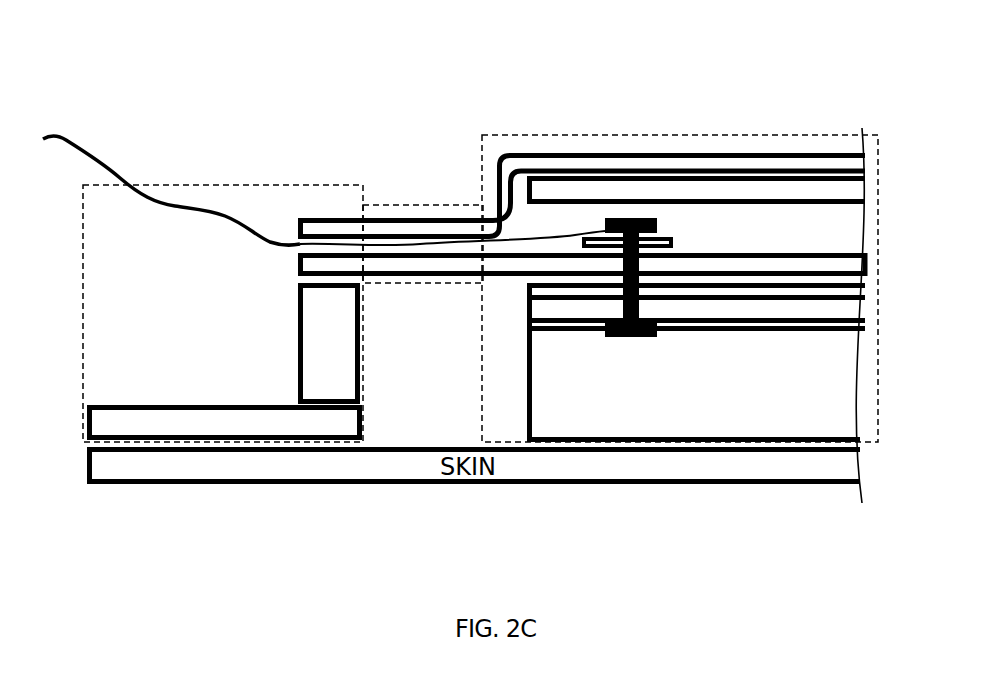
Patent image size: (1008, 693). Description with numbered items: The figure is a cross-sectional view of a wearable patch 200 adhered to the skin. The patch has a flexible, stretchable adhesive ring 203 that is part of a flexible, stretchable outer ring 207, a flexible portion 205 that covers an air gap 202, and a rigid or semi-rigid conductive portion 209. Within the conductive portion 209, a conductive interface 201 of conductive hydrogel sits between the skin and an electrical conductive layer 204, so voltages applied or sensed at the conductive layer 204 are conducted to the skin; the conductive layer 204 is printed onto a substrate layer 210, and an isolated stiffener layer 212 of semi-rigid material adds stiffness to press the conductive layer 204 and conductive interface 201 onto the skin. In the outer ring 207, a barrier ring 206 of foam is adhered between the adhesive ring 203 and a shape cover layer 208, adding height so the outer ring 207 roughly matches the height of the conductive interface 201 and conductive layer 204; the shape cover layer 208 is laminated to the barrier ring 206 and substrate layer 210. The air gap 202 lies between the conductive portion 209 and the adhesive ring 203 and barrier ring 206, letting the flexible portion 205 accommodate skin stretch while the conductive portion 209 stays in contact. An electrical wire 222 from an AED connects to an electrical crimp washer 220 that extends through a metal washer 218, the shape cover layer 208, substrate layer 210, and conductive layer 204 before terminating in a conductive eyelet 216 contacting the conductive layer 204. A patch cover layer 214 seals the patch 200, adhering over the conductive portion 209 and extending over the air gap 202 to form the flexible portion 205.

The wearable patch 200 is at (521, 65).
The conductive interface 201 is at (527, 375).
The air gap 202 is at (418, 349).
The adhesive ring 203 is at (157, 405).
The electrical conductive layer 204 is at (524, 312).
The flexible portion 205 is at (420, 203).
The barrier ring 206 is at (297, 313).
The outer ring 207 is at (227, 183).
The shape cover layer 208 is at (297, 262).
The conductive portion 209 is at (708, 133).
The substrate layer 210 is at (526, 285).
The isolated stiffener layer 212 is at (788, 176).
The patch cover layer 214 is at (628, 152).
The conductive eyelet 216 is at (629, 337).
The metal washer 218 is at (676, 249).
The electrical crimp washer 220 is at (660, 230).
The electrical wire 222 is at (71, 143).